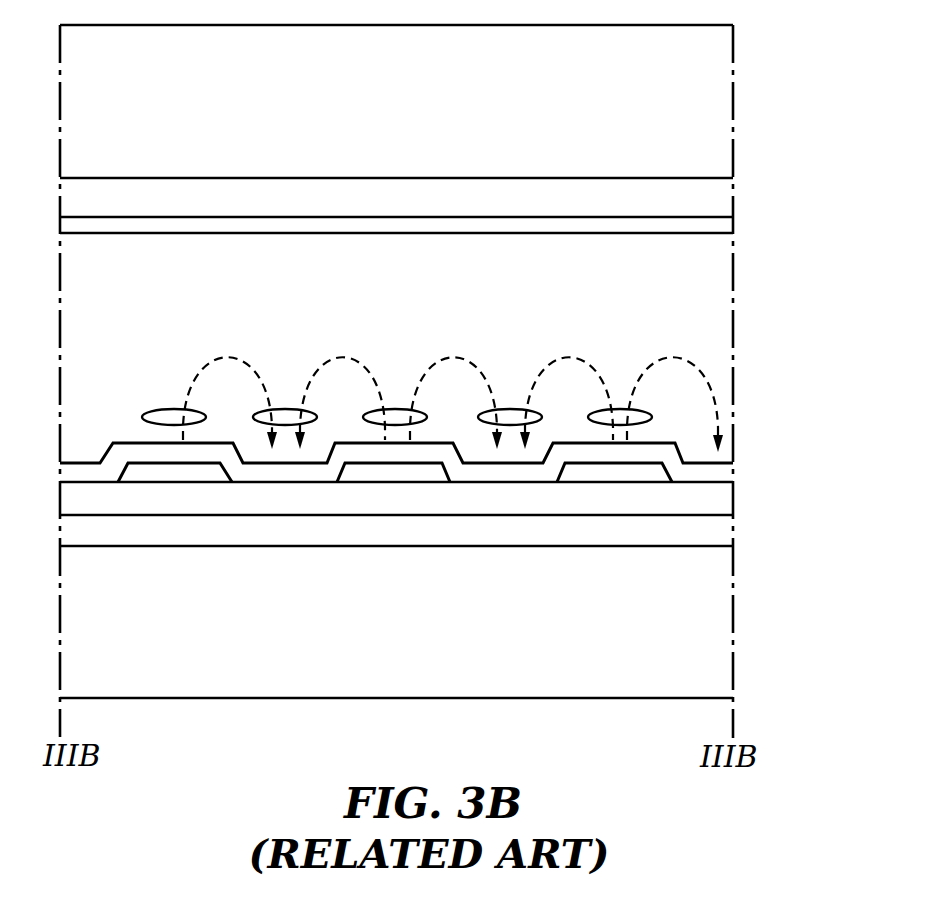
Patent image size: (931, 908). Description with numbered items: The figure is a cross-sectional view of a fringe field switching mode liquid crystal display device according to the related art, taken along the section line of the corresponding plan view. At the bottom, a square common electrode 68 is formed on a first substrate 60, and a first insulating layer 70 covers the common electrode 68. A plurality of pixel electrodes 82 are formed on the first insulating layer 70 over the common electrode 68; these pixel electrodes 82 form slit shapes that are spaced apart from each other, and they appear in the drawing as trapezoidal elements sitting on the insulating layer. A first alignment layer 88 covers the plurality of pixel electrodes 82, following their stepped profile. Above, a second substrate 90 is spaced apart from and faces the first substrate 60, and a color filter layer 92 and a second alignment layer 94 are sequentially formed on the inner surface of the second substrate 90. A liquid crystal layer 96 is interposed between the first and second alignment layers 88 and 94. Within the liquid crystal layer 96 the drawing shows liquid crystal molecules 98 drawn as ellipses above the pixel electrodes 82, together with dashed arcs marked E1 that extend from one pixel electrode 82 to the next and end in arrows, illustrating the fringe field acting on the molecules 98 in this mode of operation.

The first substrate 60 is at (421, 664).
The common electrode 68 is at (728, 535).
The first insulating layer 70 is at (725, 500).
The pixel electrodes 82 is at (175, 473).
The first alignment layer 88 is at (497, 475).
The second substrate 90 is at (394, 117).
The color filter layer 92 is at (718, 201).
The second alignment layer 94 is at (561, 229).
The liquid crystal layer 96 is at (733, 233).
The liquid crystal molecule 98 is at (165, 410).
The electric field line E1 is at (226, 358).